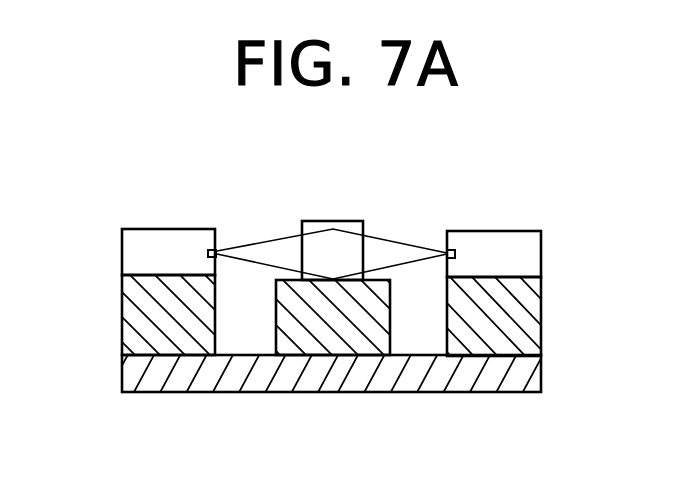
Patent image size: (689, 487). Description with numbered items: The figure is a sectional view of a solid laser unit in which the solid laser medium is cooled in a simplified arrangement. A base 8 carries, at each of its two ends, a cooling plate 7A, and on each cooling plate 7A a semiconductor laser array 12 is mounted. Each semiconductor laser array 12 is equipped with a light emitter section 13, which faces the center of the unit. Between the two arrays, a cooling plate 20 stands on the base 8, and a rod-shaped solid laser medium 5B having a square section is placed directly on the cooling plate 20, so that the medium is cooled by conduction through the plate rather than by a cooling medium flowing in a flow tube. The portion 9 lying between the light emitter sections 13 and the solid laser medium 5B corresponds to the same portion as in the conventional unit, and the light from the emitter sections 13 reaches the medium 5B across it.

The cooling plate 7A is at (144, 318).
The base 8 is at (279, 373).
The semiconductor laser array 12 is at (172, 255).
The light emitter section 13 is at (217, 248).
The light beam 9 is at (276, 241).
The optical element 5B is at (338, 252).
The cooling plate 20 is at (362, 330).